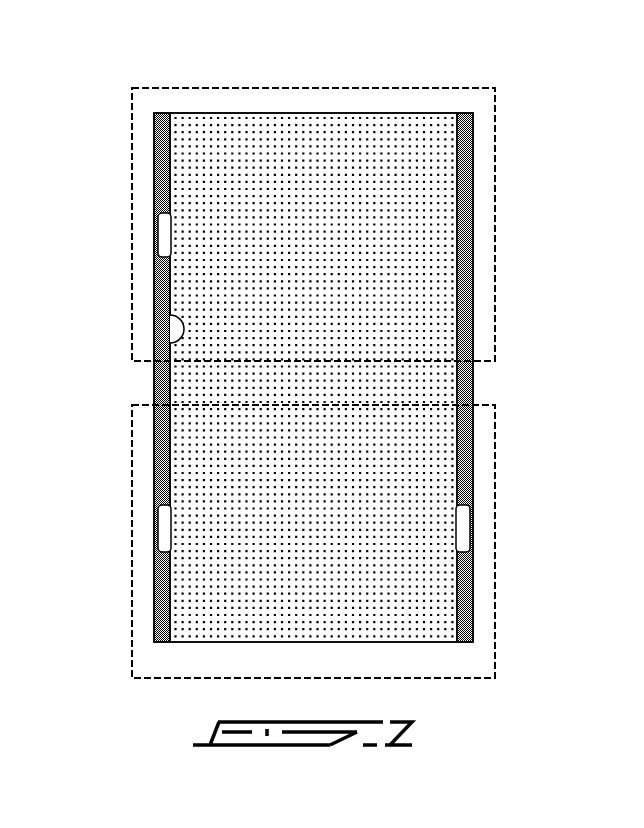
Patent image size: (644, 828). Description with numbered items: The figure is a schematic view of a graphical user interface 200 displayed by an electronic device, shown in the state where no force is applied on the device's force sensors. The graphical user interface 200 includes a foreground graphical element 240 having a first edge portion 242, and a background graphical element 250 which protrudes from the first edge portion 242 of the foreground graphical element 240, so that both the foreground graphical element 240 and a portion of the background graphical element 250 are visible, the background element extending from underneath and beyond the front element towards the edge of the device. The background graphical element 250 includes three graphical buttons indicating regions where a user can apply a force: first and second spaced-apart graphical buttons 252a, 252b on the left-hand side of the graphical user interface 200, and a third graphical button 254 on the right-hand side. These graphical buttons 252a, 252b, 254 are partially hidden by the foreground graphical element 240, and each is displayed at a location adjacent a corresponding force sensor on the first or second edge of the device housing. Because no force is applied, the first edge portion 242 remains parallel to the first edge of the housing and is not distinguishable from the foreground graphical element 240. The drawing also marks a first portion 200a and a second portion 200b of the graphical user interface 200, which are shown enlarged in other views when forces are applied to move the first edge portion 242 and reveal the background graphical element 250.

The graphical user interface 200 is at (390, 113).
The first portion 200a is at (495, 238).
The second portion 200b is at (495, 518).
The foreground graphical element 240 is at (294, 133).
The first edge portion 242 is at (172, 315).
The background graphical element 250 is at (162, 113).
The first graphical button 252a is at (165, 232).
The second graphical button 252b is at (165, 527).
The third graphical button 254 is at (463, 537).